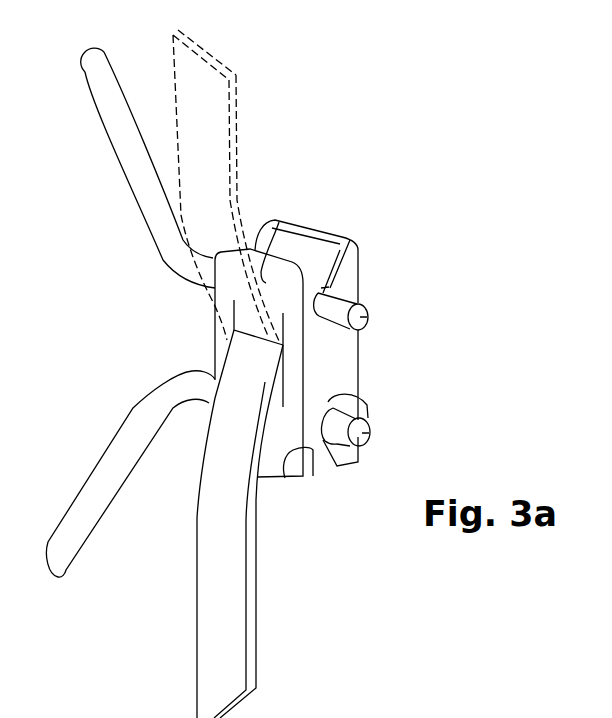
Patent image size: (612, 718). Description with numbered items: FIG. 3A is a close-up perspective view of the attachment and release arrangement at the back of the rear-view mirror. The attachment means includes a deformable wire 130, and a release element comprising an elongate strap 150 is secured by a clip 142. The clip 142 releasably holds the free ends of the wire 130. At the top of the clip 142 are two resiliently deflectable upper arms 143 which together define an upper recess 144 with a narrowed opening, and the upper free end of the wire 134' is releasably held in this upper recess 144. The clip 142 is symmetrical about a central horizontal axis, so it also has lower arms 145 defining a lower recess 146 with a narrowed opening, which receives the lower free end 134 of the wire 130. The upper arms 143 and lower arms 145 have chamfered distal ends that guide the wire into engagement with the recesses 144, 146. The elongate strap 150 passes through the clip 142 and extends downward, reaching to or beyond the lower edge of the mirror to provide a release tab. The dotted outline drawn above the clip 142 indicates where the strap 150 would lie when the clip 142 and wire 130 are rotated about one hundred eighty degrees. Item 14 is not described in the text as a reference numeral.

The buckle body 14 is at (305, 250).
The deformable wire 130 is at (119, 128).
The lower free end of the wire 134 is at (385, 440).
The upper free end of the wire 134' is at (390, 485).
The clip 142 is at (334, 370).
The upper arms 143 is at (279, 222).
The upper recess 144 is at (353, 240).
The lower arms 145 is at (283, 463).
The lower recess 146 is at (347, 397).
The elongate strap 150 is at (218, 617).